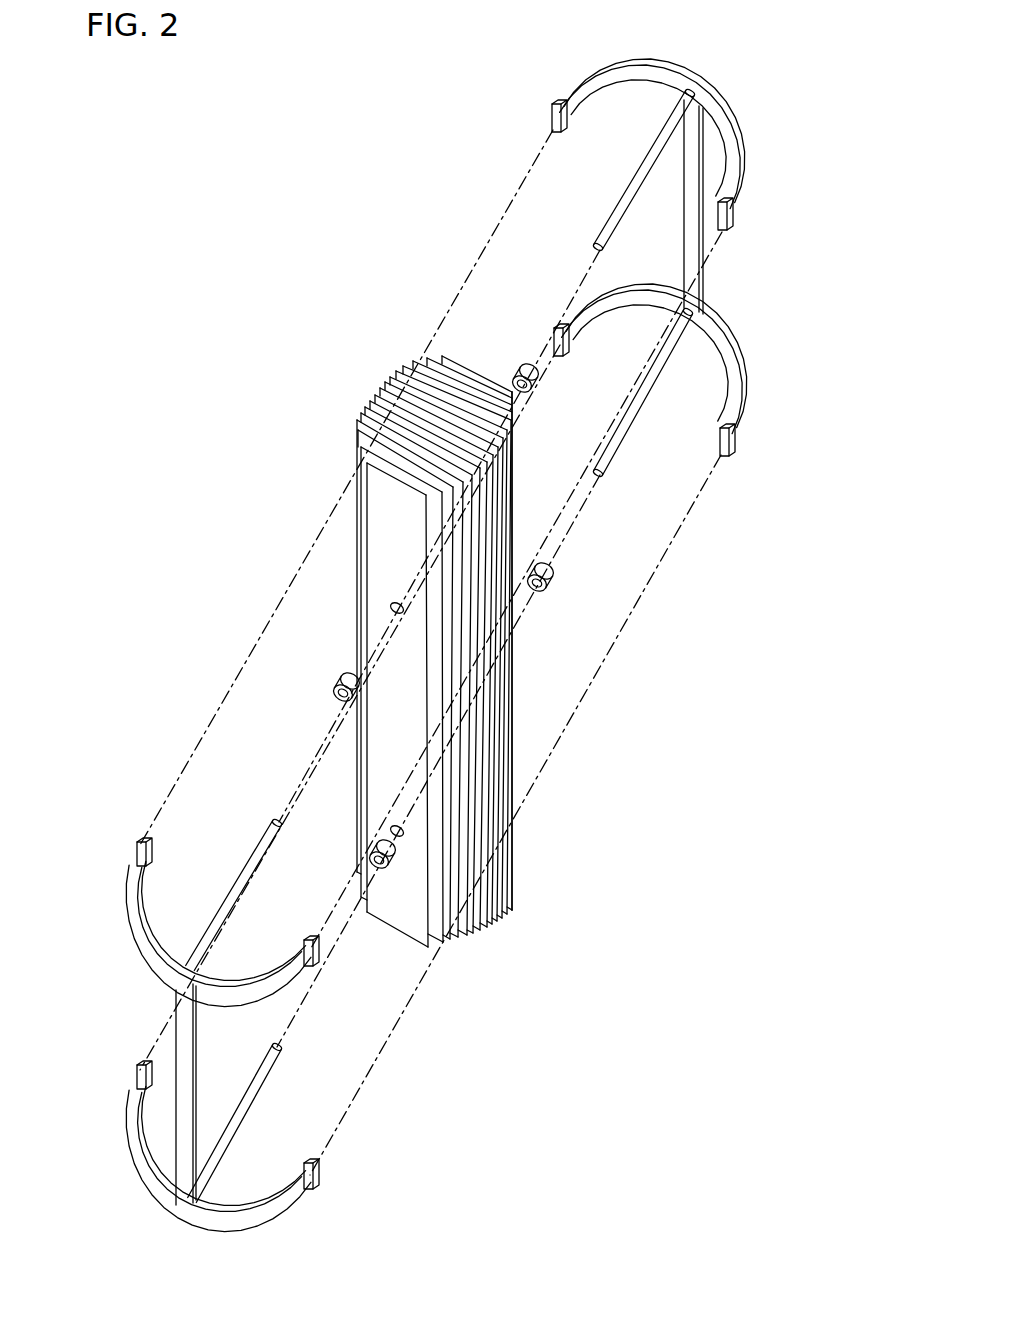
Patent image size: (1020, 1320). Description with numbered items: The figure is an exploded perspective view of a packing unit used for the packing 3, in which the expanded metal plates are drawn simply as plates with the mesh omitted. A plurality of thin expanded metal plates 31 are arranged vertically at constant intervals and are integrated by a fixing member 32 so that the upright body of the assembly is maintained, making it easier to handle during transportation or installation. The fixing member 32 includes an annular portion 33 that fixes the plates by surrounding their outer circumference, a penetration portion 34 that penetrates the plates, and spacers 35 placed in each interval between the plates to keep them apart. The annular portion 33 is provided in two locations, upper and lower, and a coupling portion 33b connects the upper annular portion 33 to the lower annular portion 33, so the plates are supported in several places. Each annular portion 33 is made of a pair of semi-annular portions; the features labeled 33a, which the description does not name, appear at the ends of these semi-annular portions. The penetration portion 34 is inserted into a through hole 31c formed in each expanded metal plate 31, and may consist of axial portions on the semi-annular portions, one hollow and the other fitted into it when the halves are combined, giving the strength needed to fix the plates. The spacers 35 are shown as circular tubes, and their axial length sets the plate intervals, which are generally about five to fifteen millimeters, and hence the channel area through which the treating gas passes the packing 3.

The packing 3 is at (323, 314).
The expanded metal plate 31 is at (395, 362).
The through hole 31c is at (391, 606).
The fixing member 32 is at (748, 74).
The annular portion 33 is at (638, 60).
The flange 33a is at (552, 102).
The coupling portion 33b is at (681, 246).
The penetration portion 34 is at (622, 192).
The spacer 35 is at (520, 366).